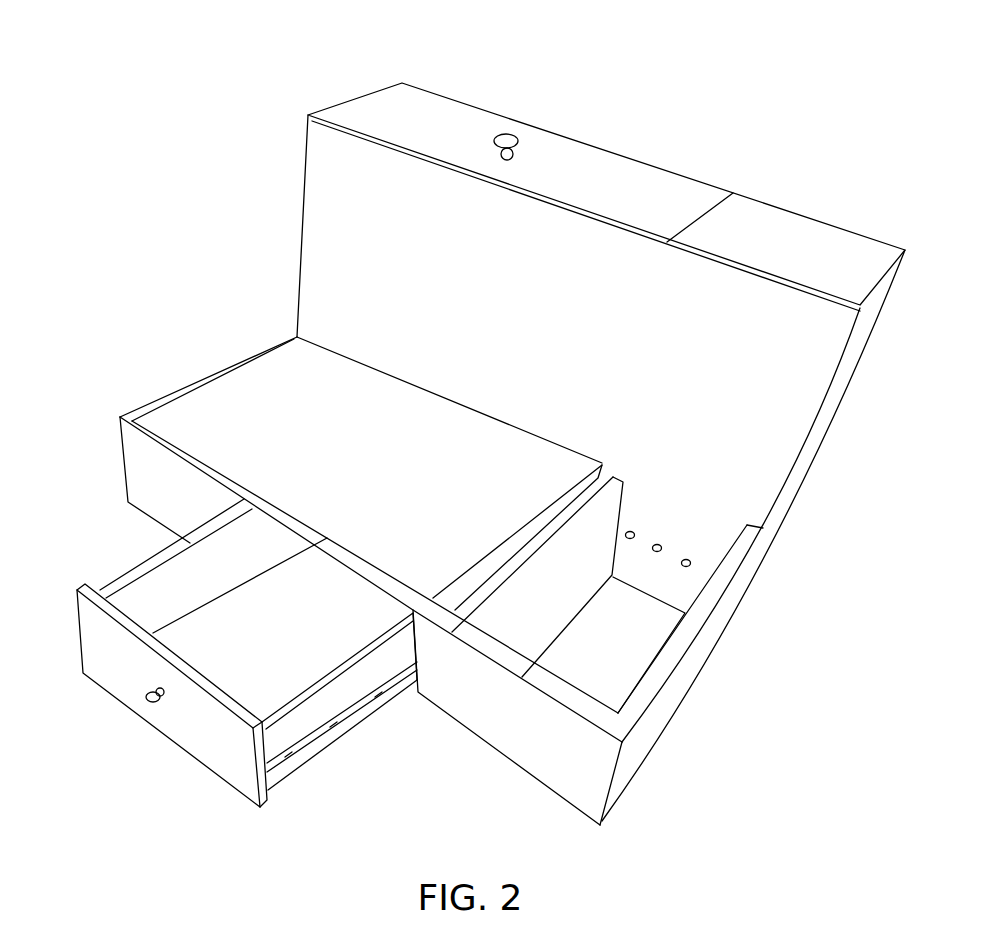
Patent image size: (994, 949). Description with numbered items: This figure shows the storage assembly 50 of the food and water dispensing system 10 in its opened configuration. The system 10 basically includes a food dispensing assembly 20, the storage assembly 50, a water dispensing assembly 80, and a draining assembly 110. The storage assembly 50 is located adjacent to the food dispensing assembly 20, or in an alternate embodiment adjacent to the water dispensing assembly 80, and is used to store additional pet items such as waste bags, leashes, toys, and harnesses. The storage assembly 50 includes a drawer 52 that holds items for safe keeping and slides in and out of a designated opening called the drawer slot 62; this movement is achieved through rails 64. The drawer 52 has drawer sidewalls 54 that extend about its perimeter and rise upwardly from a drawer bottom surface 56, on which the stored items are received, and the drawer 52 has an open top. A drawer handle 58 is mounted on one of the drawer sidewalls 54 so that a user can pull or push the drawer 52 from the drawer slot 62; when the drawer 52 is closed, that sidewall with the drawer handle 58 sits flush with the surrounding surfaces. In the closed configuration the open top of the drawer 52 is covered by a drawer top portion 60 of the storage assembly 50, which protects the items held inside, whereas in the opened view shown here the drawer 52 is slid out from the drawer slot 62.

The food and water dispensing system 10 is at (343, 46).
The food dispensing assembly 20 is at (303, 231).
The storage assembly 50 is at (228, 680).
The drawer 52 is at (117, 668).
The drawer sidewalls 54 is at (132, 617).
The drawer bottom surface 56 is at (245, 667).
The drawer handle 58 is at (143, 697).
The drawer top portion 60 is at (285, 482).
The drawer slot 62 is at (190, 543).
The rails 64 is at (293, 775).
The water dispensing assembly 80 is at (808, 438).
The draining assembly 110 is at (462, 624).